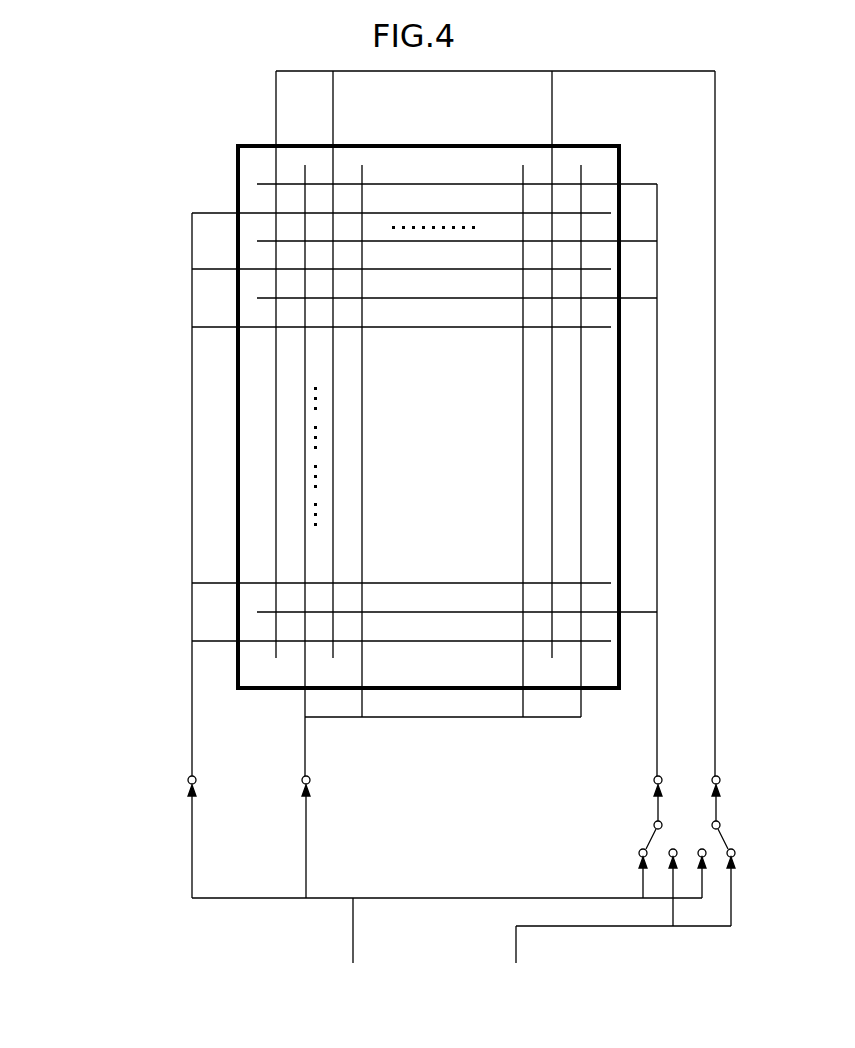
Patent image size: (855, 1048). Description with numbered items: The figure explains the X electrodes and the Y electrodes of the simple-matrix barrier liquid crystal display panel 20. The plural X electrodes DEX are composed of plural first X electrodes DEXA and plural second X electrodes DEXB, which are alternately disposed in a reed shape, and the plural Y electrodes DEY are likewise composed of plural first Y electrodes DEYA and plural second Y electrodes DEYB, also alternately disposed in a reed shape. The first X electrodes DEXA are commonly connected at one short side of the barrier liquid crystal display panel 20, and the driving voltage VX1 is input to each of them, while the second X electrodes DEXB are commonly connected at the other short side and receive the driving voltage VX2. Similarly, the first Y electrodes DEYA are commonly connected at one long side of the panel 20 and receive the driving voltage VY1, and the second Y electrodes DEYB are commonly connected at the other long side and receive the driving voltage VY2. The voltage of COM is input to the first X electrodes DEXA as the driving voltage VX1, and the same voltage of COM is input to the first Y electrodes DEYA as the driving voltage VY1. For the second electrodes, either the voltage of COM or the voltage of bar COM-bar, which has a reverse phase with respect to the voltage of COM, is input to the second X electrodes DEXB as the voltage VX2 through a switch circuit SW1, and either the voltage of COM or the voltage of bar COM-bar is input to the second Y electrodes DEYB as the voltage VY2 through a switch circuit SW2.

The barrier liquid crystal display panel 20 is at (580, 143).
The X electrodes DEX is at (72, 360).
The first X electrodes DEXA is at (305, 428).
The second X electrodes DEXB is at (276, 450).
The Y electrodes DEY is at (143, 140).
The first Y electrodes DEYA is at (265, 213).
The second Y electrodes DEYB is at (265, 184).
The driving voltage VY1 is at (172, 822).
The driving voltage VX1 is at (286, 822).
The driving voltage VY2 is at (636, 786).
The driving voltage VX2 is at (696, 786).
The switch circuit SW1 is at (646, 834).
The switch circuit SW2 is at (728, 834).
The voltage of COM is at (447, 947).
The voltage of bar COM COM-bar is at (540, 973).